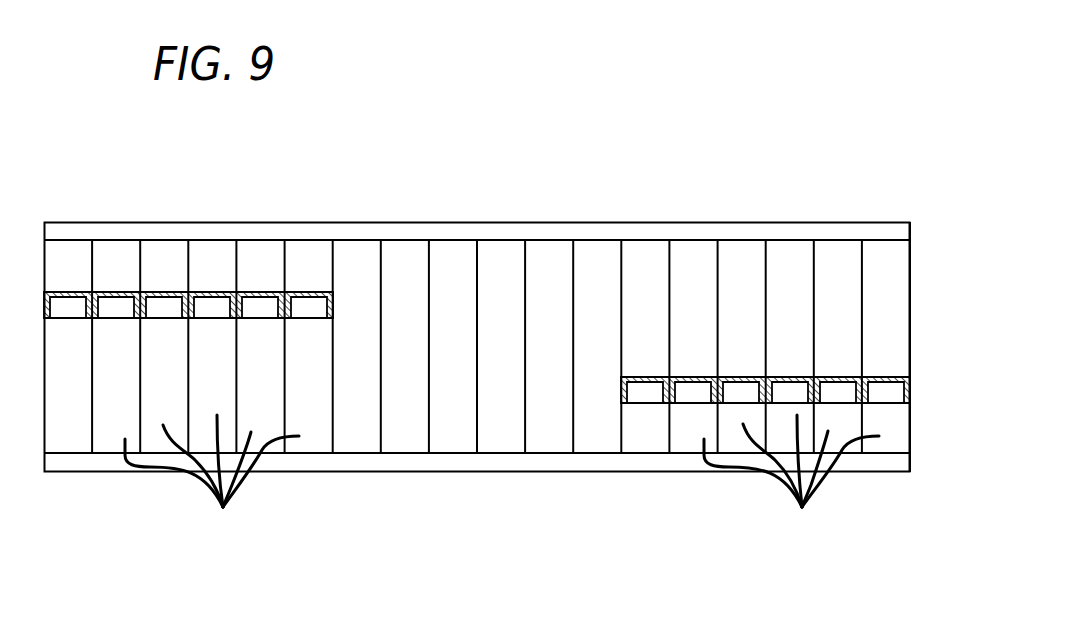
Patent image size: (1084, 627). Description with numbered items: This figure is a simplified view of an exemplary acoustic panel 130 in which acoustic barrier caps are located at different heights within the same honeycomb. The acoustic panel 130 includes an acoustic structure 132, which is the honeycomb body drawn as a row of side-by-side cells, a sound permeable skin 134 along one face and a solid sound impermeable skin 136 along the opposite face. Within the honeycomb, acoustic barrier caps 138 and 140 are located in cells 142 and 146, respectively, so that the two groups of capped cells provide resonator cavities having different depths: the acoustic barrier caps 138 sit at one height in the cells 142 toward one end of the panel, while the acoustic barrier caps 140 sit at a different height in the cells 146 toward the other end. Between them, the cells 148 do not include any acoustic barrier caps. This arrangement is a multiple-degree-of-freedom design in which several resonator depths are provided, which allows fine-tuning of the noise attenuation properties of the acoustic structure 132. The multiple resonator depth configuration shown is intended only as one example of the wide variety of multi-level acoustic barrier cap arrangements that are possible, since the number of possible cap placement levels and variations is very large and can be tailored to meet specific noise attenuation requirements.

The acoustic panel 130 is at (673, 128).
The acoustic structure 132 is at (912, 296).
The sound permeable skin 134 is at (880, 462).
The solid sound impermeable skin 136 is at (779, 230).
The acoustic barrier cap 138 is at (309, 290).
The acoustic barrier cap 140 is at (690, 375).
The cells 142 is at (212, 474).
The cells 146 is at (791, 475).
The cells 148 is at (407, 260).